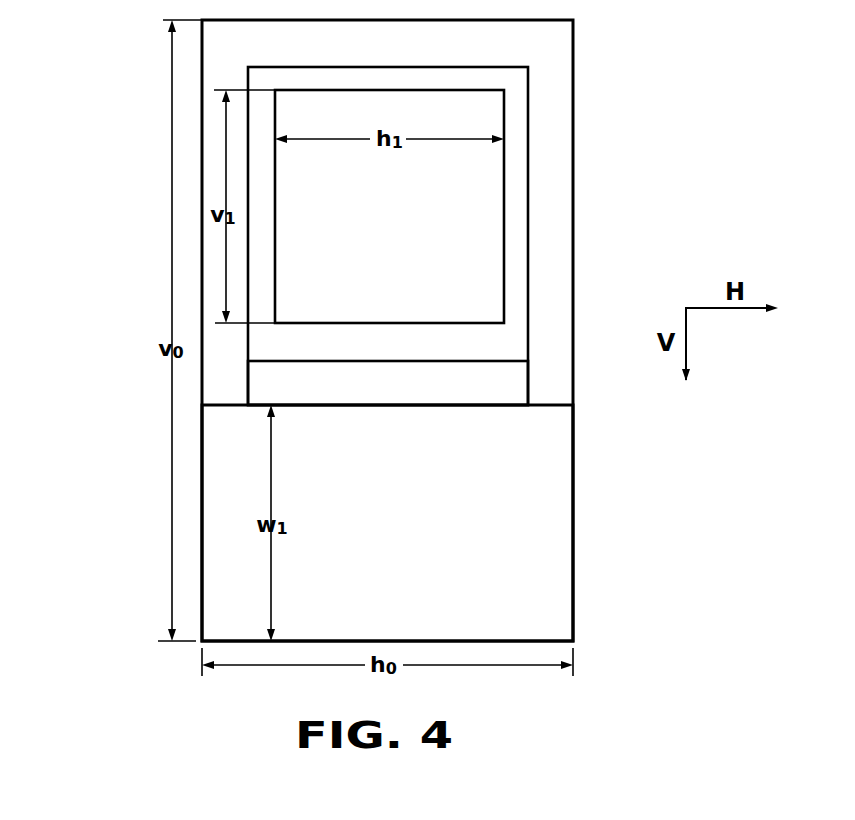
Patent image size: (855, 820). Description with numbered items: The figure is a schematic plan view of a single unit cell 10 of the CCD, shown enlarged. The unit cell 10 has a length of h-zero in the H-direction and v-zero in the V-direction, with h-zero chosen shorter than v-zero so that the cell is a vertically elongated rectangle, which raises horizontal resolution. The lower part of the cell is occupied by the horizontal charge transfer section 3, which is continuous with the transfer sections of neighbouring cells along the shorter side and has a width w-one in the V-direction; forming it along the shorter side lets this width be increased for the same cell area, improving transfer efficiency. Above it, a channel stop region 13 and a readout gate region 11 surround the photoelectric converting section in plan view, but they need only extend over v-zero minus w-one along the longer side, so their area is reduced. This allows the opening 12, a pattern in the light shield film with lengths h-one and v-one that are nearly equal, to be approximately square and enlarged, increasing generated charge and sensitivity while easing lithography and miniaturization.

The unit cell 10 is at (150, 243).
The channel stop region 13 is at (567, 88).
The opening 12 is at (506, 175).
The readout gate region 11 is at (513, 382).
The horizontal charge transfer section 3 is at (549, 543).